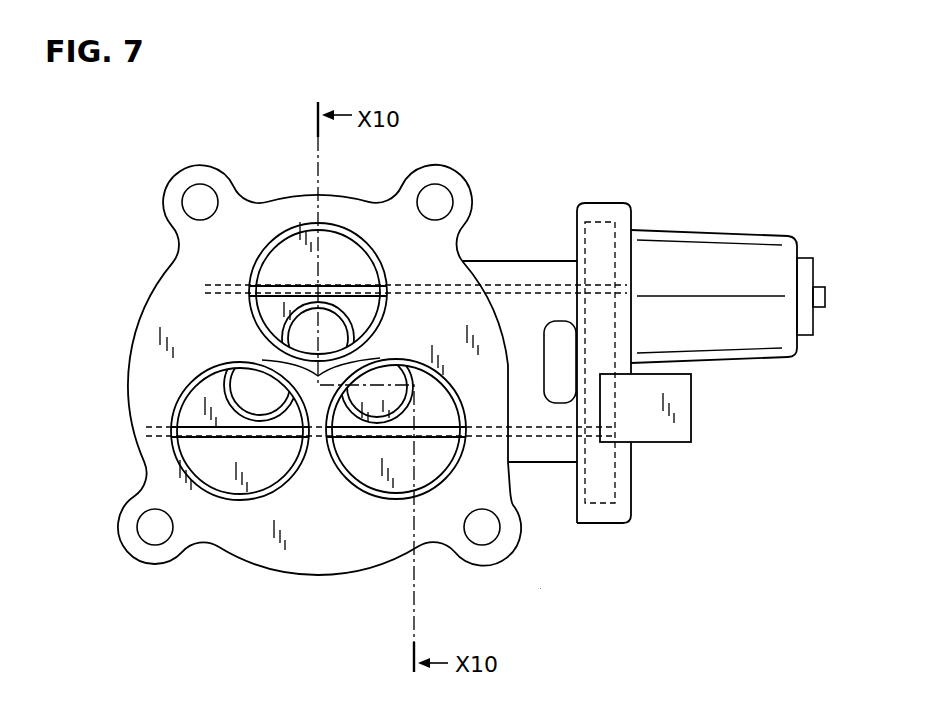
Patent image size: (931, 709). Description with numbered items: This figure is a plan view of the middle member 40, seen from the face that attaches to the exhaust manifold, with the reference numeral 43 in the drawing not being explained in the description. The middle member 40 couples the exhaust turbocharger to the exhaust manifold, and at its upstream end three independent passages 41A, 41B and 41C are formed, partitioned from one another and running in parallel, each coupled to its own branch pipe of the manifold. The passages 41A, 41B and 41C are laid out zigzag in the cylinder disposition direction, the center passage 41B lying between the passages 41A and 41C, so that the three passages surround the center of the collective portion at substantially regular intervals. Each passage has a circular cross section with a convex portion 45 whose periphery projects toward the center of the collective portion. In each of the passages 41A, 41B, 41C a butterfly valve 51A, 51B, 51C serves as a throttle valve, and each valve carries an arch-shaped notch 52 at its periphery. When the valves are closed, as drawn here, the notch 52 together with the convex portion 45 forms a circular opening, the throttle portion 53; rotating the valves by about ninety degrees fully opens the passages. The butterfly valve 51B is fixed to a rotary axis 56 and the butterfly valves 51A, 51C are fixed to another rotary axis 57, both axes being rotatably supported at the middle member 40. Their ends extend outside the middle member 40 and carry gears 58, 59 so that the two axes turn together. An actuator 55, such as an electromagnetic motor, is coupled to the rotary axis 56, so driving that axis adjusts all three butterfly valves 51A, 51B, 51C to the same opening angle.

The middle member 40 is at (540, 588).
The independent passage 41A is at (190, 465).
The independent passage 41B is at (374, 245).
The independent passage 41C is at (368, 485).
The pump housing 43 is at (240, 215).
The convex portion 45 is at (402, 363).
The butterfly valve 51A is at (188, 543).
The butterfly valve 51B is at (270, 272).
The butterfly valve 51C is at (443, 545).
The arch-shaped notch 52 is at (338, 358).
The throttle portion 53 is at (327, 419).
The actuator 55 is at (695, 237).
The rotary axis 56 is at (283, 290).
The rotary axis 57 is at (266, 436).
The gear 58 is at (604, 222).
The gear 59 is at (603, 503).